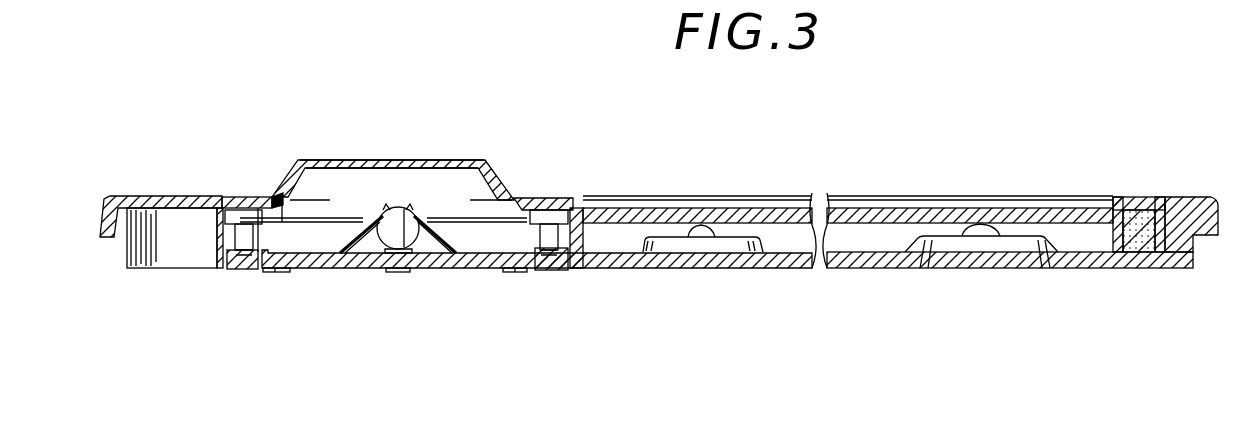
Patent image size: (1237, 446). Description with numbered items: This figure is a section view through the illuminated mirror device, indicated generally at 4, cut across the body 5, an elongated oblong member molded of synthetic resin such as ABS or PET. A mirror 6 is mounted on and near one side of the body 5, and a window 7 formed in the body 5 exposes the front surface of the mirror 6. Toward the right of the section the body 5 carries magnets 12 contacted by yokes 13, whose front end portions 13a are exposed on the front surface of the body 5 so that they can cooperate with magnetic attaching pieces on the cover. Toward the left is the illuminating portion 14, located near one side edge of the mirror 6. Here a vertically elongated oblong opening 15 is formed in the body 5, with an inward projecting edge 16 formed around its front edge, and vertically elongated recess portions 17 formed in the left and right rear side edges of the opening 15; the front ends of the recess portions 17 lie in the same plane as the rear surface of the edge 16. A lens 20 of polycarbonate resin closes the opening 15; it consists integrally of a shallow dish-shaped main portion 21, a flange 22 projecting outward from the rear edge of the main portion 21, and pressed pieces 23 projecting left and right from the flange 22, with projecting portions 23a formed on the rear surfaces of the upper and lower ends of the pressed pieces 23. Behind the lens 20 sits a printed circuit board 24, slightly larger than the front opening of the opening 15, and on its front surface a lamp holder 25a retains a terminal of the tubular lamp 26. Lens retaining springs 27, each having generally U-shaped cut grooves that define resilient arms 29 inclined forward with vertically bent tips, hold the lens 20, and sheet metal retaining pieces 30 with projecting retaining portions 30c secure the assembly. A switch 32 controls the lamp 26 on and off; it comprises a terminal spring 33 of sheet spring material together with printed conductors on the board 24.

The device assembly 4 is at (927, 135).
The body 5 is at (1200, 196).
The mirror 6 is at (827, 193).
The window 7 is at (612, 200).
The magnet 12 is at (1138, 210).
The yoke 13 is at (1158, 268).
The front end portion of yoke 13a is at (1113, 205).
The illuminating portion 14 is at (447, 157).
The opening 15 is at (280, 194).
The inward projecting edge 16 is at (258, 196).
The recess portion 17 is at (219, 235).
The lens 20 is at (396, 167).
The main portion 21 is at (356, 160).
The flange 22 is at (272, 224).
The pressed piece 23 is at (240, 209).
The projecting portion 23a is at (226, 197).
The printed circuit board 24 is at (278, 270).
The lamp holder 25a is at (420, 272).
The tubular lamp 26 is at (393, 255).
The lens retaining spring 27 is at (233, 272).
The resilient arm 29 is at (232, 258).
The retaining piece 30 is at (268, 273).
The retaining portion 30c is at (266, 273).
The switch 32 is at (355, 257).
The terminal spring 33 is at (452, 238).